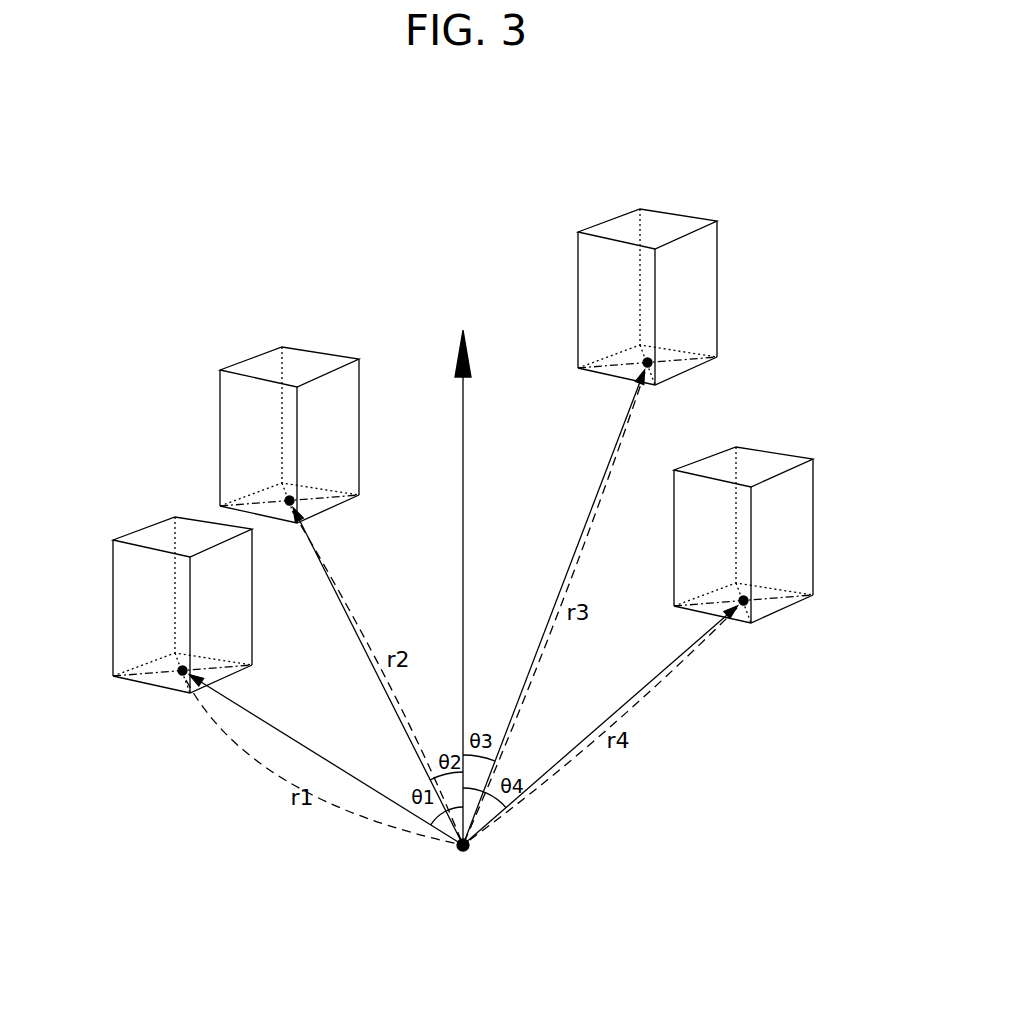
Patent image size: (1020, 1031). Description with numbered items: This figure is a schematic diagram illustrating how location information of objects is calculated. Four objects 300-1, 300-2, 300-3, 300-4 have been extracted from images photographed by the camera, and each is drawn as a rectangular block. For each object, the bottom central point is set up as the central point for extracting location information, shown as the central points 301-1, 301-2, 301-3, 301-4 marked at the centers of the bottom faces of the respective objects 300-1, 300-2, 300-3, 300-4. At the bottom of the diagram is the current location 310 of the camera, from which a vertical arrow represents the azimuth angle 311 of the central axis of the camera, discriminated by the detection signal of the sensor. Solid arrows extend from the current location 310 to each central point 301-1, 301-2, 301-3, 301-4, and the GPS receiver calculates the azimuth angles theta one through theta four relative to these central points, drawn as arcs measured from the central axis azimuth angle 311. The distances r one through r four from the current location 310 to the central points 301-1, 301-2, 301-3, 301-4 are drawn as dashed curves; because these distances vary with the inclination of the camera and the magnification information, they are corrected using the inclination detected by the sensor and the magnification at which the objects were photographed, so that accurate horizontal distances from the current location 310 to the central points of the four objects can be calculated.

The object 300-1 is at (130, 590).
The central point 301-1 is at (180, 676).
The object 300-2 is at (267, 367).
The central point 301-2 is at (287, 497).
The object 300-3 is at (663, 224).
The central point 301-3 is at (648, 356).
The object 300-4 is at (772, 466).
The central point 301-4 is at (742, 607).
The current location 310 is at (466, 852).
The azimuth angle of the central axis 311 is at (466, 410).